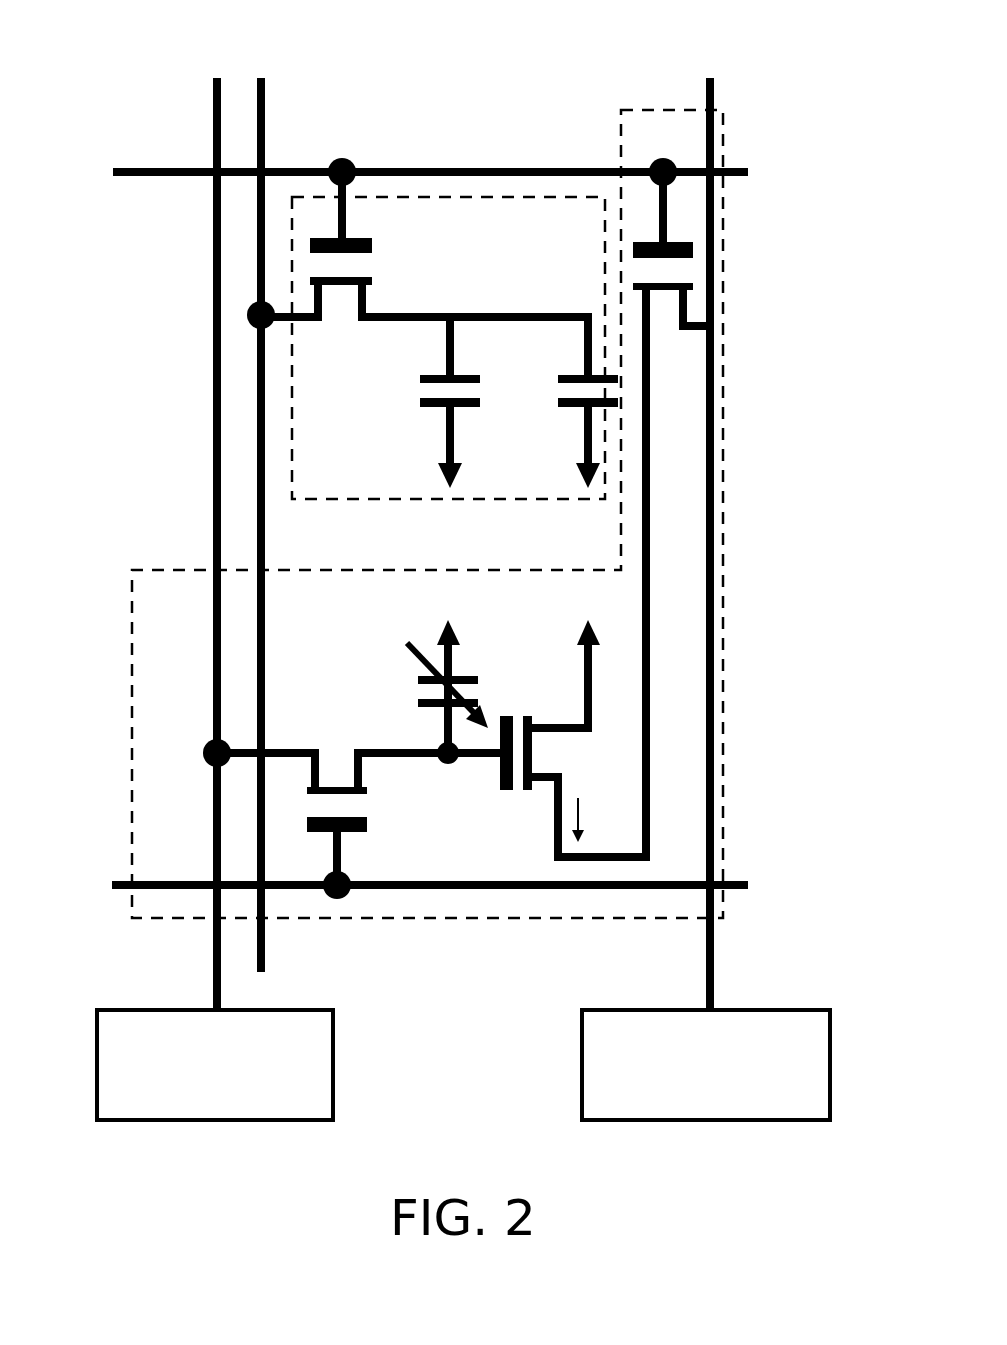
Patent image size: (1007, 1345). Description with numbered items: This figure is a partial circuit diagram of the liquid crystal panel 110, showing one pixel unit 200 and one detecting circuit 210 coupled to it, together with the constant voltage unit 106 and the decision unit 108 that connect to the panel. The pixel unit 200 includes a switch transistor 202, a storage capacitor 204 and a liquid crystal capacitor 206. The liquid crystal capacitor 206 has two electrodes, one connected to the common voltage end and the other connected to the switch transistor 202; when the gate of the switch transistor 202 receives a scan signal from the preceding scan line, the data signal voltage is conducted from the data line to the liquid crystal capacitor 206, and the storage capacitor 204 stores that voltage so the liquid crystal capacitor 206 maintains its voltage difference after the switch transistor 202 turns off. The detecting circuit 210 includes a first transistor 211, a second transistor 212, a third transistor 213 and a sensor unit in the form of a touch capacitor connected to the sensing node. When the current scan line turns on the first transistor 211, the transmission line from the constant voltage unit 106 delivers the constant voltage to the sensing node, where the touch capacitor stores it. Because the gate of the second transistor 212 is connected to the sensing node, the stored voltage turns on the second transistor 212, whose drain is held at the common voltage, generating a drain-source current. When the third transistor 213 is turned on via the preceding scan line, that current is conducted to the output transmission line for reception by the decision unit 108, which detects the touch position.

The constant voltage unit 106 is at (253, 1120).
The decision unit 108 is at (667, 1120).
The liquid crystal panel 110 is at (501, 27).
The pixel unit 200 is at (292, 417).
The switch transistor 202 is at (327, 238).
The storage capacitor 204 is at (427, 373).
The liquid crystal capacitor 206 is at (582, 373).
The detecting circuit 210 is at (637, 110).
The first transistor 211 is at (358, 833).
The second transistor 212 is at (503, 790).
The third transistor 213 is at (672, 242).